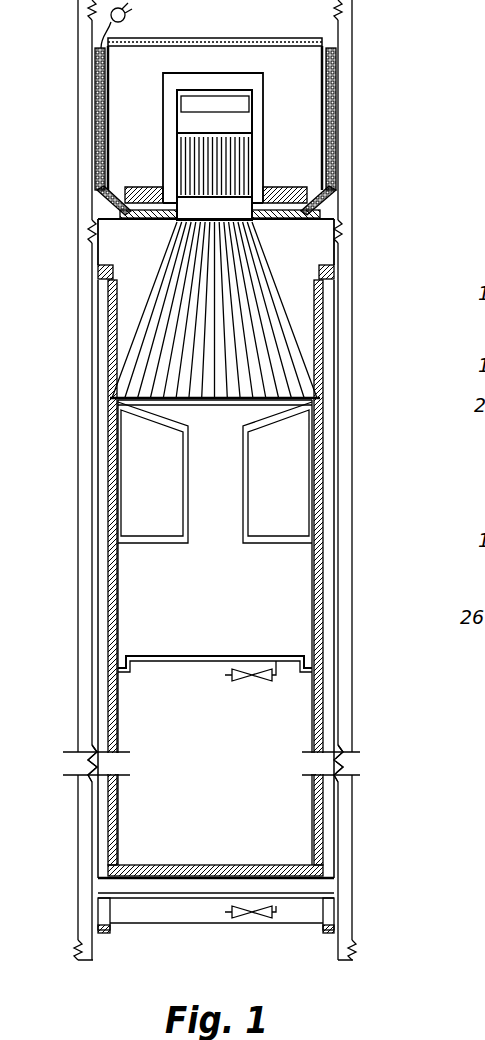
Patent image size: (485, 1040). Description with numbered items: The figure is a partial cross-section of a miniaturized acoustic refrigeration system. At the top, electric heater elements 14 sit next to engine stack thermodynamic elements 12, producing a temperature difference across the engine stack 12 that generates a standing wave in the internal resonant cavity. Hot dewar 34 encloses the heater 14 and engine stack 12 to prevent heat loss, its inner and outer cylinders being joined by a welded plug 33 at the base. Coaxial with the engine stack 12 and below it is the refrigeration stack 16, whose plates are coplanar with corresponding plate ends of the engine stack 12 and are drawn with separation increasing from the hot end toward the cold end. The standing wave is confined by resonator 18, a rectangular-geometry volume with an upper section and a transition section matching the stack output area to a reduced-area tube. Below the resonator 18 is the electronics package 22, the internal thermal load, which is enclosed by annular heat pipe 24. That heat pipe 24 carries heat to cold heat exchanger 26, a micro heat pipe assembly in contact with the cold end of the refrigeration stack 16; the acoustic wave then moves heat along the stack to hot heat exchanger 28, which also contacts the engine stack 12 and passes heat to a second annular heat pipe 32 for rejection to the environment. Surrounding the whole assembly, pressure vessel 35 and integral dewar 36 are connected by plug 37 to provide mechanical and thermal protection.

The engine stack thermodynamic elements 12 is at (245, 167).
The electric heater elements 14 is at (192, 128).
The refrigeration stack 16 is at (283, 310).
The resonator 18 is at (215, 637).
The electronics package 22 is at (214, 809).
The annular heat pipe 24 is at (323, 450).
The cold heat exchanger 26 is at (132, 398).
The hot heat exchanger 28 is at (190, 212).
The second annular heat pipe 32 is at (343, 68).
The welded plug 33 is at (300, 212).
The hot dewar 34 is at (127, 80).
The pressure vessel 35 is at (347, 410).
The integral dewar 36 is at (322, 344).
The plug 37 is at (338, 267).